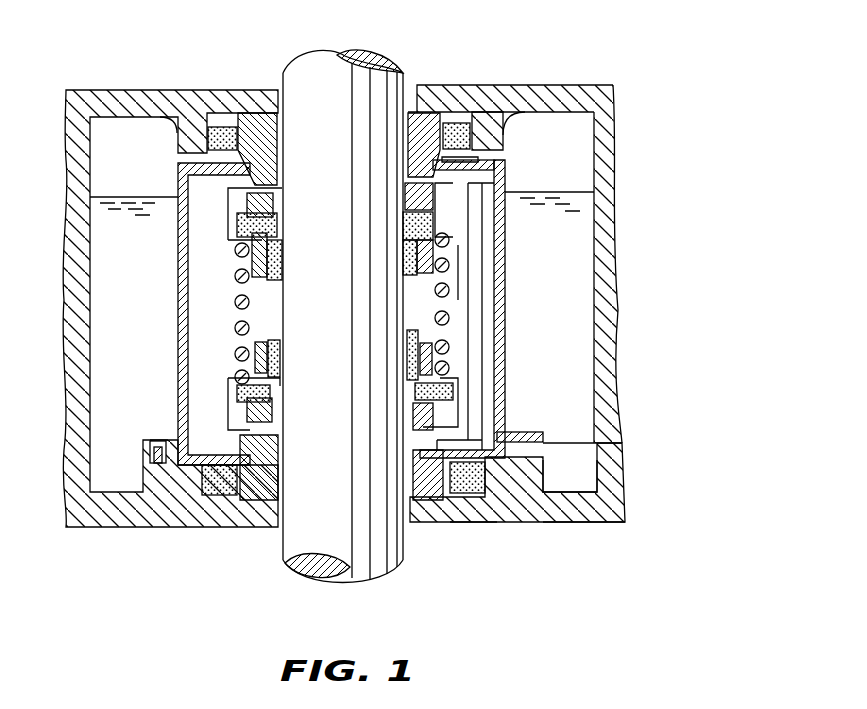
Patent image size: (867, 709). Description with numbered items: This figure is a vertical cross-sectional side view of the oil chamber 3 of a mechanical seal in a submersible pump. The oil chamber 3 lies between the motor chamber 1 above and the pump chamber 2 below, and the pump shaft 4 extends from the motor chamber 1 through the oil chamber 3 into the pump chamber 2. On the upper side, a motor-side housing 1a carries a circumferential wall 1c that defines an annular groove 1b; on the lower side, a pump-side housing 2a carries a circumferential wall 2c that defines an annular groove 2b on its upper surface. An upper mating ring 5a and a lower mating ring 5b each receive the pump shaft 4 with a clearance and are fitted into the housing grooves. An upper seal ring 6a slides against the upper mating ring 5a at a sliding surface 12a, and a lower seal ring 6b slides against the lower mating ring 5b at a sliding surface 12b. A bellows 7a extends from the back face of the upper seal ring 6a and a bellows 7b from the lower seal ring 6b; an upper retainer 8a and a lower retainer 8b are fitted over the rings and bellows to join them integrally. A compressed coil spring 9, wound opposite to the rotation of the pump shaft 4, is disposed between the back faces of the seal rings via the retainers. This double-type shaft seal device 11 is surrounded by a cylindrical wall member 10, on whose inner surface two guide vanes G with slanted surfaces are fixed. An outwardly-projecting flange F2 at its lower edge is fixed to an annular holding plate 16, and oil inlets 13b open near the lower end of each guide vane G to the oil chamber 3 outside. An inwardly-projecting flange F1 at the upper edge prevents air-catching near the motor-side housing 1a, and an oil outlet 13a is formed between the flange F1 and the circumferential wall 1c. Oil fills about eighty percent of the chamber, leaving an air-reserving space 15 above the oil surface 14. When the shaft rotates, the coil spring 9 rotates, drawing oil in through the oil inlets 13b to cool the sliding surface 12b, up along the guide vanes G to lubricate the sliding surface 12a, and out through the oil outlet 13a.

The motor chamber 1 is at (232, 73).
The motor-side housing 1a is at (462, 85).
The annular groove 1b is at (492, 130).
The circumferential wall 1c is at (505, 110).
The pump chamber 2 is at (238, 564).
The pump-side housing 2a is at (550, 523).
The annular groove 2b is at (472, 498).
The circumferential wall 2c is at (540, 472).
The oil chamber 3 is at (590, 300).
The pump shaft 4 is at (350, 558).
The upper mating ring 5a is at (420, 112).
The lower mating ring 5b is at (433, 501).
The upper seal ring 6a is at (452, 195).
The lower seal ring 6b is at (455, 408).
The bellows 7a is at (228, 236).
The bellows 7b is at (228, 395).
The upper retainer 8a is at (230, 212).
The lower retainer 8b is at (228, 413).
The compressed coil spring 9 is at (236, 330).
The cylindrical wall member 10 is at (178, 294).
The double-type shaft seal device 11 is at (432, 318).
The sliding surface 12a is at (462, 184).
The sliding surface 12b is at (437, 442).
The oil outlet 13a is at (504, 155).
The oil inlets 13b is at (543, 443).
The oil surface 14 is at (128, 196).
The air-reserving space 15 is at (152, 123).
The annular holding plate 16 is at (187, 465).
The inwardly-projecting flange F1 is at (505, 172).
The outwardly-projecting flange F2 is at (147, 443).
The guide vanes G is at (483, 328).